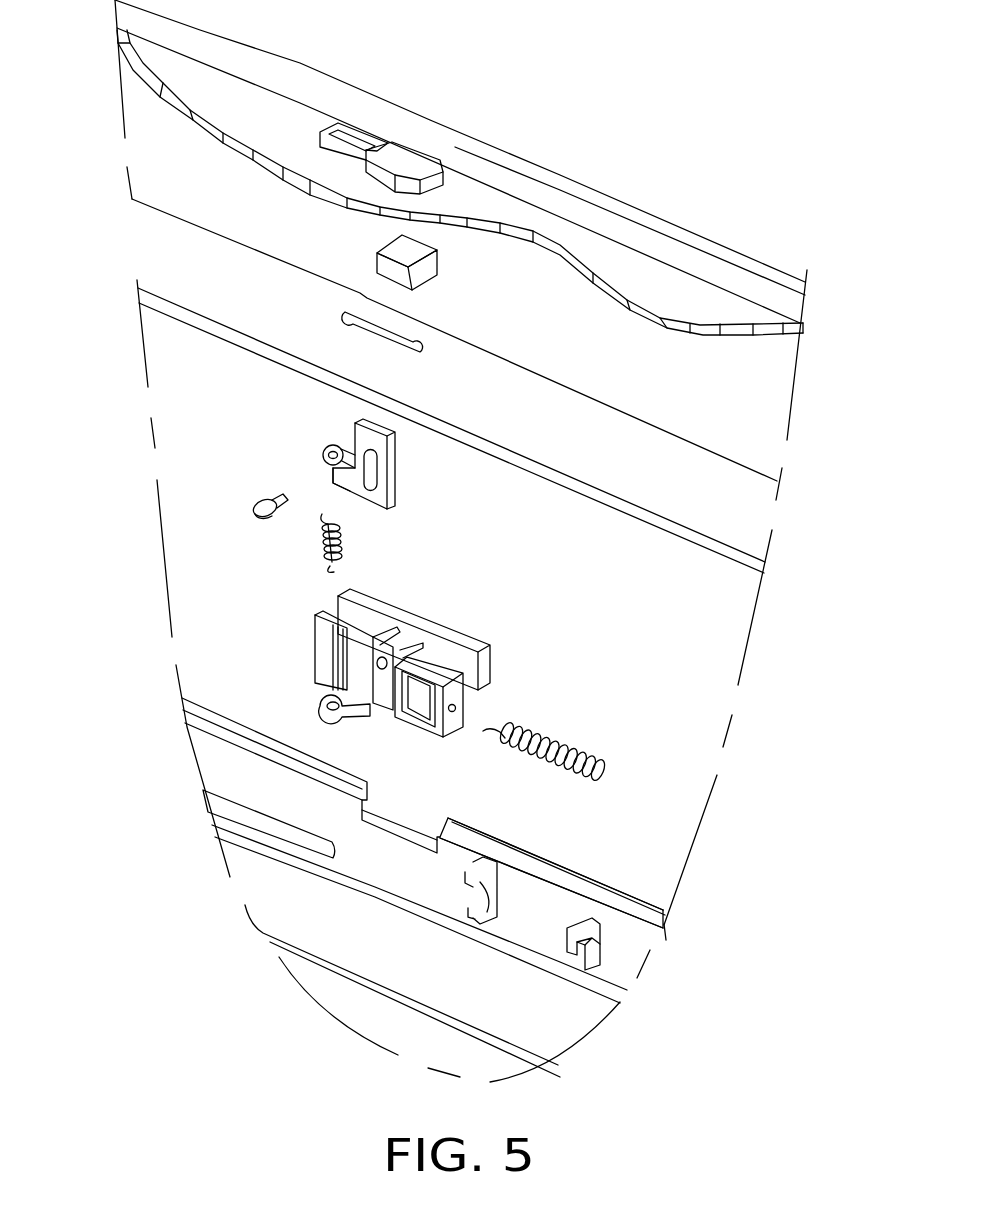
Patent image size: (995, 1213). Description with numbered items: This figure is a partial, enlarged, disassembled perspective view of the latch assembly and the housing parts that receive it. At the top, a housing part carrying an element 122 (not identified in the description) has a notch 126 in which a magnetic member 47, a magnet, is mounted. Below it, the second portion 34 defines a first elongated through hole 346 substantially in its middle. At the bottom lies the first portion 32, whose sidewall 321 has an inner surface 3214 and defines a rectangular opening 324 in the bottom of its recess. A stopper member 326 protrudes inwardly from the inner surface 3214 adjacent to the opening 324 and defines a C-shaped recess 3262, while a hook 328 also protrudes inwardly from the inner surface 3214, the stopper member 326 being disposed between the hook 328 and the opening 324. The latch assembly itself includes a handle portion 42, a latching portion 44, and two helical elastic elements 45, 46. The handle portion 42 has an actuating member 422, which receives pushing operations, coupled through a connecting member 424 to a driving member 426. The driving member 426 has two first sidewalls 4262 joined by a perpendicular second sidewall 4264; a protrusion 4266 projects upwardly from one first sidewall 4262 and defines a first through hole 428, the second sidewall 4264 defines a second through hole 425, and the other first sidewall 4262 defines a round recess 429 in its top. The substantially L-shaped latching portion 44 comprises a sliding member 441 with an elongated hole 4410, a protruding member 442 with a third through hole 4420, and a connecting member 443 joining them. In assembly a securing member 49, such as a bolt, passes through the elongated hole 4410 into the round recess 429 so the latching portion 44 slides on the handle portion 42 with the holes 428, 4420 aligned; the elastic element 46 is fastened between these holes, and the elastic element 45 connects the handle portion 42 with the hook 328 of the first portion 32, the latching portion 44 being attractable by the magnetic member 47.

The cover 122 is at (637, 235).
The notch 126 is at (428, 152).
The magnetic member 47 is at (425, 252).
The second portion 34 is at (630, 438).
The first elongated through hole 346 is at (425, 340).
The latching portion 44 is at (230, 394).
The sliding member 441 is at (388, 436).
The elongated hole 4410 is at (374, 476).
The protruding member 442 is at (337, 448).
The third through hole 4420 is at (331, 450).
The connecting member 443 is at (340, 485).
The securing member 49 is at (262, 502).
The elastic element 46 is at (342, 536).
The handle portion 42 is at (500, 550).
The actuating member 422 is at (470, 640).
The connecting member 424 is at (397, 642).
The second through hole 425 is at (453, 714).
The driving member 426 is at (323, 625).
The first through hole 428 is at (327, 703).
The round recess 429 is at (378, 672).
The first sidewalls 4262 is at (428, 735).
The second sidewall 4264 is at (470, 700).
The protrusion 4266 is at (357, 712).
The elastic element 45 is at (552, 736).
The first portion 32 is at (446, 890).
The sidewall 321 is at (648, 912).
The rectangular opening 324 is at (415, 825).
The stopper member 326 is at (490, 863).
The hook 328 is at (593, 958).
The C-shaped recess 3262 is at (598, 902).
The inner surface 3214 is at (280, 790).